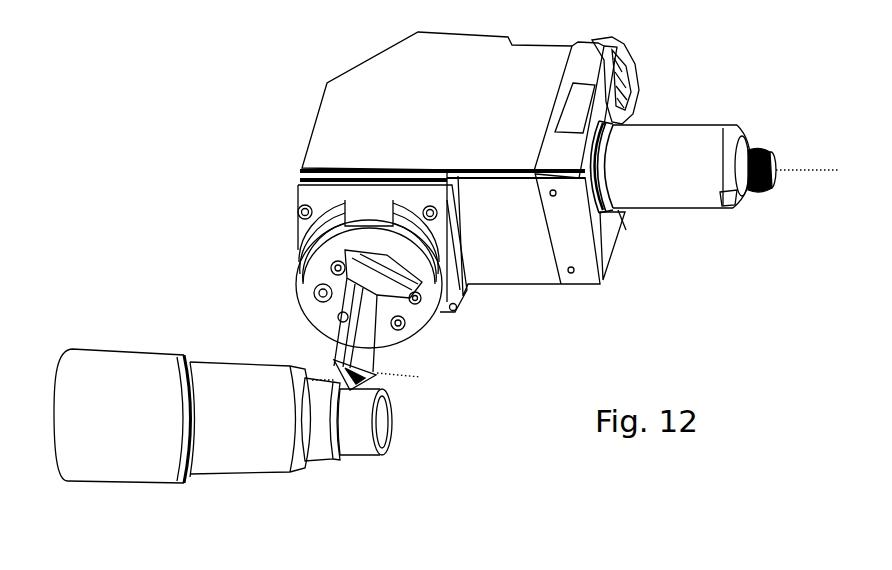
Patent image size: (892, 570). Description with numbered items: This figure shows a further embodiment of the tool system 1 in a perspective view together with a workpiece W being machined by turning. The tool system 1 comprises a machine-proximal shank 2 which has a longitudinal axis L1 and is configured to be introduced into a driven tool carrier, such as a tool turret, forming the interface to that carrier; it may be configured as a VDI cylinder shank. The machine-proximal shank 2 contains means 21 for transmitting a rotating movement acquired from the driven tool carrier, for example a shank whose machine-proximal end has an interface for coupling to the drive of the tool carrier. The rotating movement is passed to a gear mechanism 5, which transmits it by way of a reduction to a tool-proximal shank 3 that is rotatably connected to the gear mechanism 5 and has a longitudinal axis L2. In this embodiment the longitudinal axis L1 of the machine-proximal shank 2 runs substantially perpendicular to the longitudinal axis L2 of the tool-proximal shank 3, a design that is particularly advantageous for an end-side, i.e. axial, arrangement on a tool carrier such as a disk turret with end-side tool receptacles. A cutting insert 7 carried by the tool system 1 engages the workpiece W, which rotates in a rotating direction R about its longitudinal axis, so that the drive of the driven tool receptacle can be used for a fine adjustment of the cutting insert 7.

The tool system 1 is at (266, 73).
The machine-proximal shank 2 is at (660, 142).
The means for transmitting a rotating movement 21 is at (760, 143).
The tool-proximal shank 3 is at (300, 253).
The gear mechanism 5 is at (426, 122).
The cutting insert 7 is at (376, 373).
The longitudinal axis of the machine-proximal shank L1 is at (807, 157).
The longitudinal axis of the tool-proximal shank L2 is at (345, 343).
The workpiece W is at (134, 420).
The rotating direction R is at (207, 394).